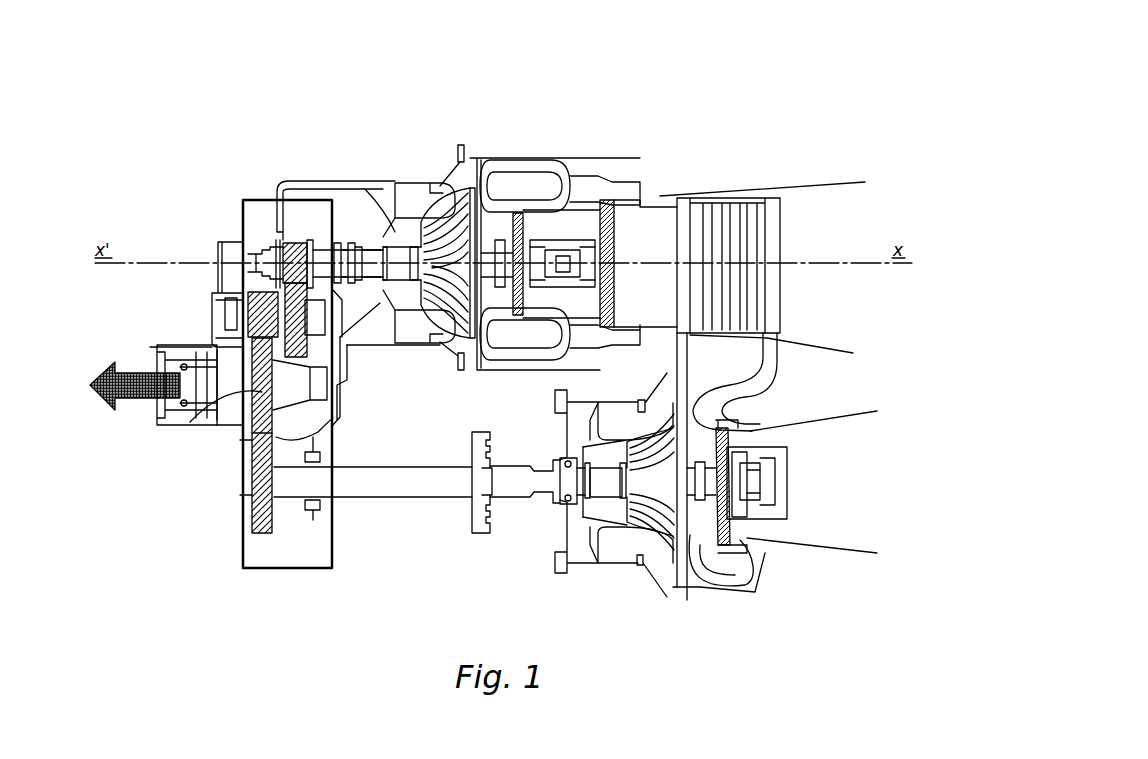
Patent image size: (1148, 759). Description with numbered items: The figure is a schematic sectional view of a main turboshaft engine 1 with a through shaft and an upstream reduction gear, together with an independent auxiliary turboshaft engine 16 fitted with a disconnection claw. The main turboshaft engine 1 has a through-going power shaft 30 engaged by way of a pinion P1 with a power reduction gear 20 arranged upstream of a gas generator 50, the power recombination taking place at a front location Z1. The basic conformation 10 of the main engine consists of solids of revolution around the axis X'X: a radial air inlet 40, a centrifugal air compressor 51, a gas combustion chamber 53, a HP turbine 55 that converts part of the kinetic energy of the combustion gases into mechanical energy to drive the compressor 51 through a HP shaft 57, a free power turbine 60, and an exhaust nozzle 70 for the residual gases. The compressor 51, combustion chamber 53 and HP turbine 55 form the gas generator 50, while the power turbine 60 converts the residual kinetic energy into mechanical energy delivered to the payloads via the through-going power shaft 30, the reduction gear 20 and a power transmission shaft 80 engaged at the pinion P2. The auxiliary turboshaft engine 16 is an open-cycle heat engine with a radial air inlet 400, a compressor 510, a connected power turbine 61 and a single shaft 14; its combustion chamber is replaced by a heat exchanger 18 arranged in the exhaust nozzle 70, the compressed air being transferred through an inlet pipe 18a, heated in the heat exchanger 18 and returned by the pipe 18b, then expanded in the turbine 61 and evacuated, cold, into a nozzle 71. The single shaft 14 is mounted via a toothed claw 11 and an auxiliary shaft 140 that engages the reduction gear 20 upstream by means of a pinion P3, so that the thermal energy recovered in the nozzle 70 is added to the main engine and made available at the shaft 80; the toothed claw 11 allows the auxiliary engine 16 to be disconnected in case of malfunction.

The main turboshaft engine 1 is at (649, 76).
The basic conformation 10 is at (447, 104).
The toothed claw 11 is at (483, 540).
The single shaft 14 is at (600, 506).
The auxiliary turboshaft engine 16 is at (700, 620).
The heat exchanger 18 is at (753, 192).
The inlet pipe 18a is at (678, 372).
The pipe 18b is at (770, 337).
The power reduction gear 20 is at (264, 295).
The through-going power shaft 30 is at (297, 244).
The radial air inlet 40 is at (387, 198).
The gas generator 50 is at (588, 131).
The centrifugal air compressor 51 is at (432, 205).
The gas combustion chamber 53 is at (556, 178).
The HP turbine 55 is at (513, 332).
The HP shaft 57 is at (392, 288).
The power turbine 60 is at (637, 205).
The connected power turbine 61 is at (752, 538).
The exhaust nozzle 70 is at (575, 273).
The nozzle 71 is at (762, 483).
The power transmission shaft 80 is at (188, 392).
The auxiliary shaft 140 is at (378, 504).
The radial air inlet 400 is at (587, 418).
The compressor 510 is at (640, 532).
The pinion P1 is at (301, 250).
The pinion P2 is at (262, 388).
The pinion P3 is at (262, 515).
The front location Z1 is at (335, 574).